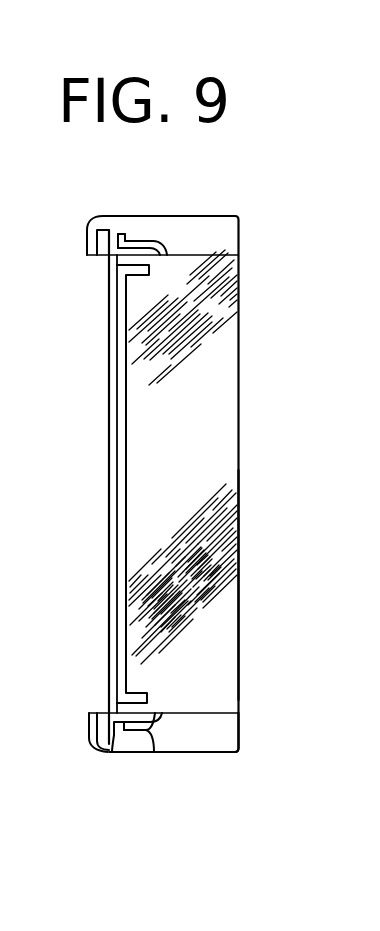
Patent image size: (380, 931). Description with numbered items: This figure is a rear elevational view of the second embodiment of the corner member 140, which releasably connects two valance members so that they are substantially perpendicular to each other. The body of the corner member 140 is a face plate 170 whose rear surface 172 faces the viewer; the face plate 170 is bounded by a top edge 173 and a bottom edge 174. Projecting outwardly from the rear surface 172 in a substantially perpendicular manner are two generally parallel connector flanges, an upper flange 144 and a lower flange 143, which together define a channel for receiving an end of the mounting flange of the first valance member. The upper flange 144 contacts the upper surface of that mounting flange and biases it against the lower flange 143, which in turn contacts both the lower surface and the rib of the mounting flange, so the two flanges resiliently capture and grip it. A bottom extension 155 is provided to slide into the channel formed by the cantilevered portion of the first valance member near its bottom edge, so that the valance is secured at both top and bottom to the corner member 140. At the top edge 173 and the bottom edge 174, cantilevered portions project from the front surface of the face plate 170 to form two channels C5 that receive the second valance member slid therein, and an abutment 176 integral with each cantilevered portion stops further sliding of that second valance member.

The corner member 140 is at (267, 175).
The face plate 170 is at (220, 438).
The rear surface 172 is at (223, 628).
The bottom edge 174 is at (220, 753).
The top edge 173 is at (124, 233).
The upper flange 144 is at (150, 249).
The bottom extension 155 is at (118, 233).
The abutment 176 is at (87, 242).
The lower flange 143 is at (128, 272).
The channel C5 is at (242, 246).